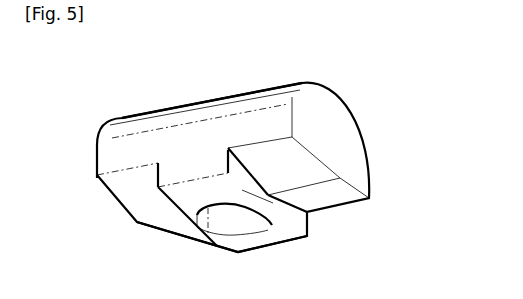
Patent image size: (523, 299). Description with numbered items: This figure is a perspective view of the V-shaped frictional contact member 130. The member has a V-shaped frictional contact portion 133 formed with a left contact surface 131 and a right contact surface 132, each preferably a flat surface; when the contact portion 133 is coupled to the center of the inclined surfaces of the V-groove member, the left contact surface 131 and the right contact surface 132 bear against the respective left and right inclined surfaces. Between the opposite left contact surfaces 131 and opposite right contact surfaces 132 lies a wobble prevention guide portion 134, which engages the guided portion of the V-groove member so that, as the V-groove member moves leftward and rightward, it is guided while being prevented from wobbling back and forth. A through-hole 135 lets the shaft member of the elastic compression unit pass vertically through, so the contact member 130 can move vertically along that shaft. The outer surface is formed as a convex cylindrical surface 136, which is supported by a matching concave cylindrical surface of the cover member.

The V-shaped frictional contact member 130 is at (172, 120).
The left contact surface 131 is at (123, 185).
The right contact surface 132 is at (172, 228).
The V-shaped frictional contact portion 133 is at (137, 203).
The wobble prevention guide portion 134 is at (278, 238).
The through-hole 135 is at (232, 215).
The convex cylindrical surface 136 is at (248, 95).